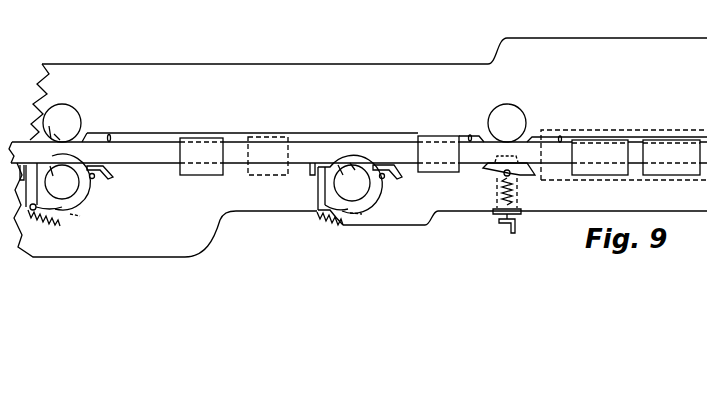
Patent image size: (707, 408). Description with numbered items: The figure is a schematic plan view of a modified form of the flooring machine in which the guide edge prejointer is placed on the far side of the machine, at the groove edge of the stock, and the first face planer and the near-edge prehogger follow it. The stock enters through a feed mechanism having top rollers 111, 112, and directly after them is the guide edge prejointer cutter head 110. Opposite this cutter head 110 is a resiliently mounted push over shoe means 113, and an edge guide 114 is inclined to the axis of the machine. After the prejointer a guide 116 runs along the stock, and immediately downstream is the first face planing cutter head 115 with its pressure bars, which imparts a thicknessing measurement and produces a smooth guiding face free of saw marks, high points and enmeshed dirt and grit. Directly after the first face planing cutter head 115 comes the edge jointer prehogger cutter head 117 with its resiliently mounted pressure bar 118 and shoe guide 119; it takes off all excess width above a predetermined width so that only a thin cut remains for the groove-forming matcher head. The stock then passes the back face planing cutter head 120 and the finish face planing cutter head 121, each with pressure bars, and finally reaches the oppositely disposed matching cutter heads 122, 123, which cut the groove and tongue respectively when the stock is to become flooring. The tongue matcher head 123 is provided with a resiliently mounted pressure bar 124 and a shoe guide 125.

The guide edge prejointer cutter head 110 is at (514, 112).
The top roller 111 is at (605, 140).
The top roller 112 is at (665, 140).
The push over shoe means 113 is at (524, 176).
The edge guide 114 is at (554, 137).
The first face planing cutter head 115 is at (430, 136).
The guide 116 is at (318, 132).
The edge jointer prehogger cutter head 117 is at (362, 194).
The pressure bar 118 is at (388, 179).
The shoe guide 119 is at (316, 192).
The back face planing cutter head 120 is at (262, 137).
The finish face planing cutter head 121 is at (196, 138).
The matching cutter head 122 is at (68, 112).
The matching cutter head 123 is at (76, 187).
The pressure bar 124 is at (104, 172).
The shoe guide 125 is at (34, 222).